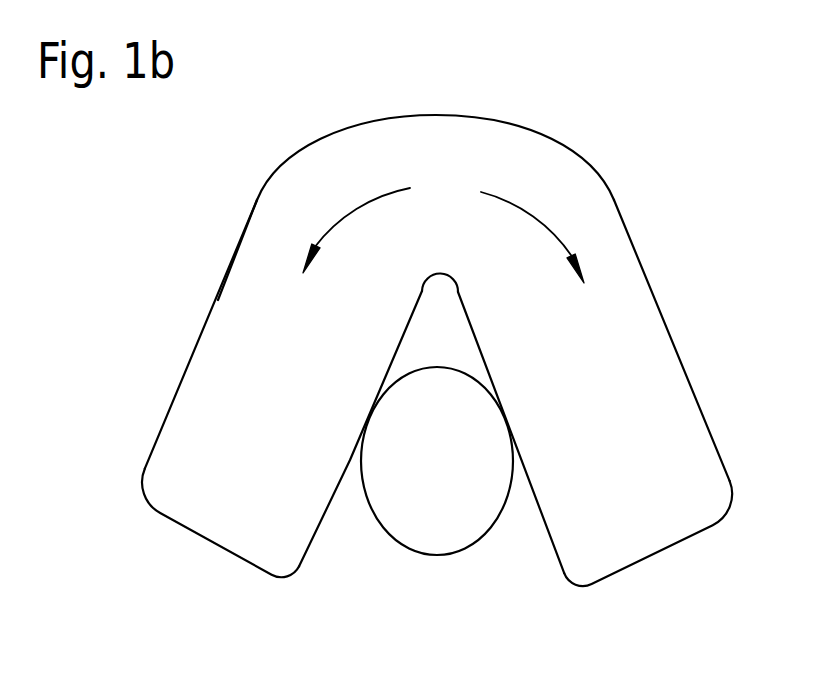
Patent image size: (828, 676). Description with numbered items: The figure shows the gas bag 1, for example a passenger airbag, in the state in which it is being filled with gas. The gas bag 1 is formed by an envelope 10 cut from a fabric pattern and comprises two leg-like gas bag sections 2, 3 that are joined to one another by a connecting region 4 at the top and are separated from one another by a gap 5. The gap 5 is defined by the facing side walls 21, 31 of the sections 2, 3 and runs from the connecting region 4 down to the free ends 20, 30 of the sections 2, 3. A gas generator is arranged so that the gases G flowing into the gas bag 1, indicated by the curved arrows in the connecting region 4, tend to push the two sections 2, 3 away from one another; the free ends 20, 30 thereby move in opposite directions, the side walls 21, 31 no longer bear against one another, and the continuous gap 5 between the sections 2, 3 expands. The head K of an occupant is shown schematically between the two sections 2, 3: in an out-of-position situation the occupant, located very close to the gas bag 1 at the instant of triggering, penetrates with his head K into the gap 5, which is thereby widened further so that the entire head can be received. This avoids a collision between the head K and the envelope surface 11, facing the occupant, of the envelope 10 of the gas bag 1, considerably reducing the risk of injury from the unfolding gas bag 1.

The gas bag 1 is at (430, 78).
The envelope 10 is at (316, 136).
The envelope surface 11 is at (270, 326).
The connecting region 4 is at (461, 150).
The gap 5 is at (442, 335).
The gas bag section 2 is at (200, 381).
The free end 20 is at (218, 501).
The side wall 21 is at (413, 355).
The gas bag section 3 is at (673, 423).
The free end 30 is at (608, 518).
The side wall 31 is at (486, 370).
The gases G is at (337, 223).
The head K is at (427, 510).